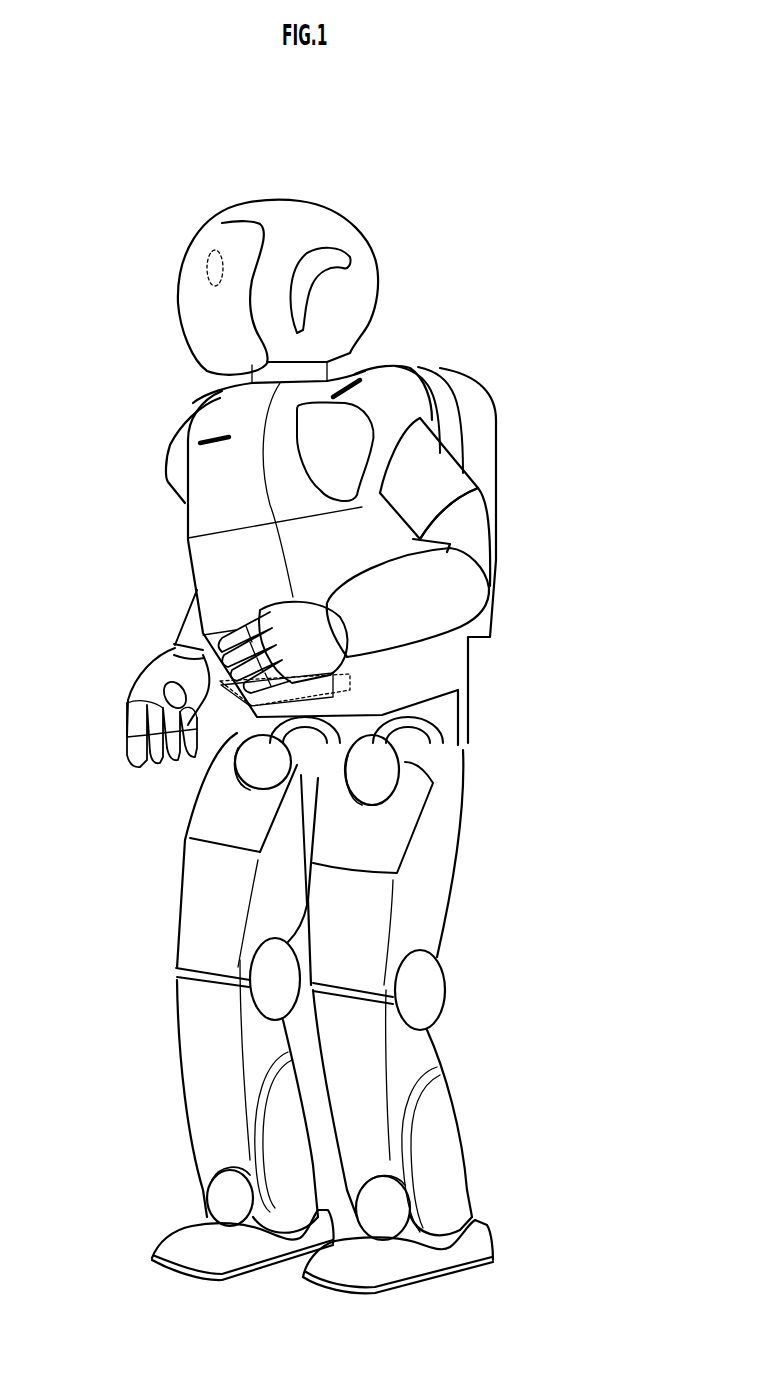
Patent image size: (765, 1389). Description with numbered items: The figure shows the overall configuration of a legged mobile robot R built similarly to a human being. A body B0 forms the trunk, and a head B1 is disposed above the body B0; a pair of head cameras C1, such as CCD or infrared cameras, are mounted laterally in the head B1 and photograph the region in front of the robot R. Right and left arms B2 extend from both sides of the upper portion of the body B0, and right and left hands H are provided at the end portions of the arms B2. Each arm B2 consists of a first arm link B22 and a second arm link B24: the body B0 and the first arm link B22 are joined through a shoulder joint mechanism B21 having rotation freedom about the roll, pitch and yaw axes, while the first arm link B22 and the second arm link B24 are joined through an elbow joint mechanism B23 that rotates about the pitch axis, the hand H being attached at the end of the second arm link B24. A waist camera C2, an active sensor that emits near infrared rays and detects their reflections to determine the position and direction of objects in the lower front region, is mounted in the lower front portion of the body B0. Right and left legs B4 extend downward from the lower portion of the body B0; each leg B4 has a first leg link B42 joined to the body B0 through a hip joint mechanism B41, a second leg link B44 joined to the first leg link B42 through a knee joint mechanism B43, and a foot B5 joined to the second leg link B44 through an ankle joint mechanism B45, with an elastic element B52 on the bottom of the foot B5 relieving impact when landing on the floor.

The robot R is at (103, 160).
The head B1 is at (385, 225).
The head camera C1 is at (197, 266).
The body B0 is at (212, 558).
The arm B2 is at (596, 484).
The shoulder joint mechanism B21 is at (396, 387).
The first arm link B22 is at (454, 481).
The elbow joint mechanism B23 is at (481, 531).
The second arm link B24 is at (473, 599).
The hand H is at (299, 596).
The waist camera C2 is at (362, 676).
The leg B4 is at (574, 855).
The hip joint mechanism B41 is at (427, 761).
The first leg link B42 is at (479, 815).
The knee joint mechanism B43 is at (456, 990).
The second leg link B44 is at (469, 1110).
The ankle joint mechanism B45 is at (443, 1200).
The foot B5 is at (157, 1222).
The elastic element B52 is at (148, 1265).